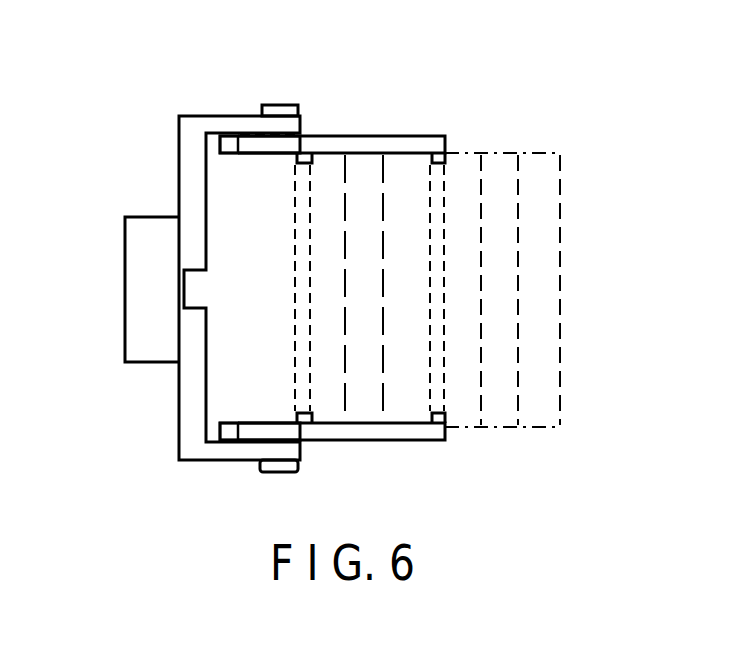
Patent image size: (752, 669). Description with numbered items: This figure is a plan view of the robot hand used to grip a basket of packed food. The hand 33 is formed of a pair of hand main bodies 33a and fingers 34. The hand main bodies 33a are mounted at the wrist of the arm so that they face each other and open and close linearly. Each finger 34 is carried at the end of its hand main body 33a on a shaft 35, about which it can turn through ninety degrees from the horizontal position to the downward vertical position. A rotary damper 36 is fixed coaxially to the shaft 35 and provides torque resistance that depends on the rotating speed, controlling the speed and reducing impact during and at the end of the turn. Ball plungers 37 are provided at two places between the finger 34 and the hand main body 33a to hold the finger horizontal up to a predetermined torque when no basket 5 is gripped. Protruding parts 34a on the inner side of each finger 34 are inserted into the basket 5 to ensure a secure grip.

The basket containing packed foods 5 is at (561, 233).
The hand 33 is at (140, 210).
The hand main body 33a is at (178, 136).
The finger 34 is at (442, 137).
The protruding part 34a is at (437, 137).
The shaft 35 is at (273, 140).
The rotary damper 36 is at (273, 105).
The ball plunger 37 is at (245, 132).